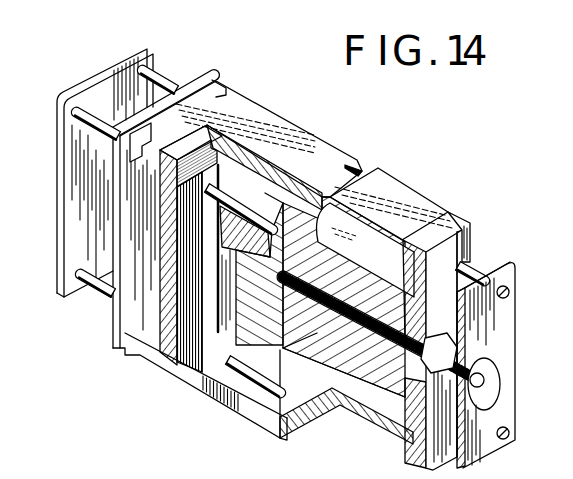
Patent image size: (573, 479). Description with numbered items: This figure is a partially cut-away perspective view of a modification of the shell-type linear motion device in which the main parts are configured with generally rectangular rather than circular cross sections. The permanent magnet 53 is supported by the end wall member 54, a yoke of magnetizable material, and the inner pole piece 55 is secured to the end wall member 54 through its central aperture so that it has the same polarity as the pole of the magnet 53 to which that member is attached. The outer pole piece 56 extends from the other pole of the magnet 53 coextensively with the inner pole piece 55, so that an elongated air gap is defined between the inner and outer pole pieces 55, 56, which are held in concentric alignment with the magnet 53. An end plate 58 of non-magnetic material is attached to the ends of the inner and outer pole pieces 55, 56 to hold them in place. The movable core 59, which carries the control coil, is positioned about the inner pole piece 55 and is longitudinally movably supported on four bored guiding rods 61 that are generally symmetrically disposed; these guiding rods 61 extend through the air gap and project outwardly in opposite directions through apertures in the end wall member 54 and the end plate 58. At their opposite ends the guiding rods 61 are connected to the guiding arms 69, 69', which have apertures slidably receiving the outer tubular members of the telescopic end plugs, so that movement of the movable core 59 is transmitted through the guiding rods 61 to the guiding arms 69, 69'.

The permanent magnet 53 is at (433, 186).
The end wall member 54 is at (462, 218).
The inner pole piece 55 is at (362, 372).
The outer pole piece 56 is at (321, 135).
The end plate 58 is at (210, 73).
The movable core 59 is at (216, 290).
The bored guiding rods 61 is at (92, 116).
The guiding arm 69 is at (505, 365).
The guiding arm 69' is at (84, 173).